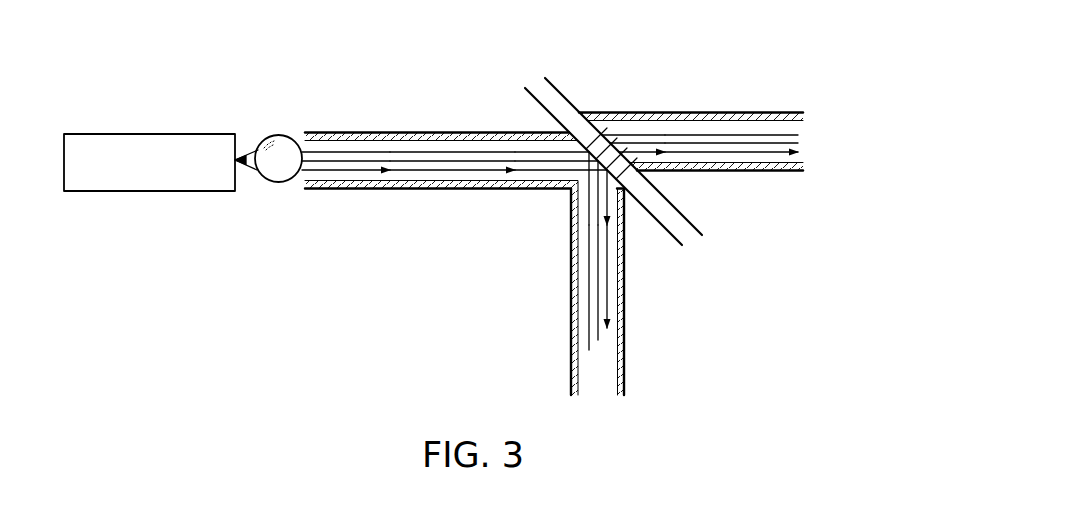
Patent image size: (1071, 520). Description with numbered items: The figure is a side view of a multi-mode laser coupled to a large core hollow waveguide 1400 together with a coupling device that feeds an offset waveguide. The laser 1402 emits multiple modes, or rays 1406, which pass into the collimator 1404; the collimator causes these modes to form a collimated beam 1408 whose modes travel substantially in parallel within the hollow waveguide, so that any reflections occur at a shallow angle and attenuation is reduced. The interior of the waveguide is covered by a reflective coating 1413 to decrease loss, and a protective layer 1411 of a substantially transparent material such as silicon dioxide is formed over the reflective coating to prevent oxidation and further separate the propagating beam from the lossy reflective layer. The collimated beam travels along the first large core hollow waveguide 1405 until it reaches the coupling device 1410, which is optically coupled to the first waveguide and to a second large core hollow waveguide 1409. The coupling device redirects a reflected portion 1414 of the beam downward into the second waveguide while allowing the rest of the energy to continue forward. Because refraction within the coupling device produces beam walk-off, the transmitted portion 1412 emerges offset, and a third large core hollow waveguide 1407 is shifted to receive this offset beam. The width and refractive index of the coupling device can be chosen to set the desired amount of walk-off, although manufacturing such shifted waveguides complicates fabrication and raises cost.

The large core hollow waveguide 1400 is at (326, 91).
The laser 1402 is at (152, 192).
The collimator 1404 is at (286, 184).
The first large core hollow waveguide 1405 is at (338, 196).
The rays 1406 is at (240, 178).
The third large core hollow waveguide 1407 is at (777, 194).
The collimated beam 1408 is at (441, 156).
The second large core hollow waveguide 1409 is at (560, 318).
The coupling device 1410 is at (547, 98).
The protective layer 1411 is at (345, 138).
The transmitted portion 1412 is at (740, 149).
The reflective coating 1413 is at (428, 138).
The reflected portion 1414 is at (608, 293).